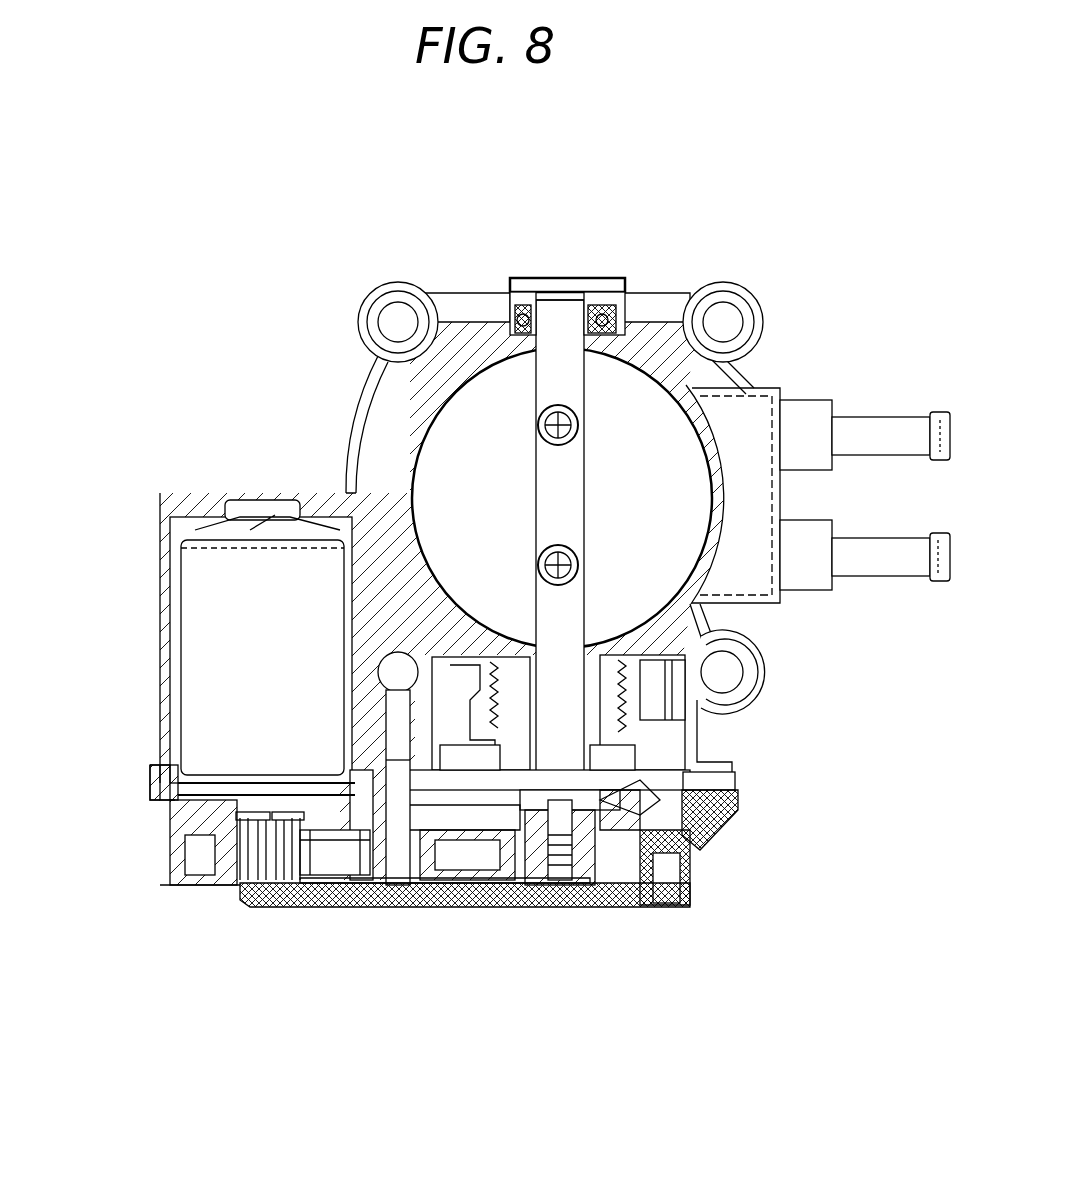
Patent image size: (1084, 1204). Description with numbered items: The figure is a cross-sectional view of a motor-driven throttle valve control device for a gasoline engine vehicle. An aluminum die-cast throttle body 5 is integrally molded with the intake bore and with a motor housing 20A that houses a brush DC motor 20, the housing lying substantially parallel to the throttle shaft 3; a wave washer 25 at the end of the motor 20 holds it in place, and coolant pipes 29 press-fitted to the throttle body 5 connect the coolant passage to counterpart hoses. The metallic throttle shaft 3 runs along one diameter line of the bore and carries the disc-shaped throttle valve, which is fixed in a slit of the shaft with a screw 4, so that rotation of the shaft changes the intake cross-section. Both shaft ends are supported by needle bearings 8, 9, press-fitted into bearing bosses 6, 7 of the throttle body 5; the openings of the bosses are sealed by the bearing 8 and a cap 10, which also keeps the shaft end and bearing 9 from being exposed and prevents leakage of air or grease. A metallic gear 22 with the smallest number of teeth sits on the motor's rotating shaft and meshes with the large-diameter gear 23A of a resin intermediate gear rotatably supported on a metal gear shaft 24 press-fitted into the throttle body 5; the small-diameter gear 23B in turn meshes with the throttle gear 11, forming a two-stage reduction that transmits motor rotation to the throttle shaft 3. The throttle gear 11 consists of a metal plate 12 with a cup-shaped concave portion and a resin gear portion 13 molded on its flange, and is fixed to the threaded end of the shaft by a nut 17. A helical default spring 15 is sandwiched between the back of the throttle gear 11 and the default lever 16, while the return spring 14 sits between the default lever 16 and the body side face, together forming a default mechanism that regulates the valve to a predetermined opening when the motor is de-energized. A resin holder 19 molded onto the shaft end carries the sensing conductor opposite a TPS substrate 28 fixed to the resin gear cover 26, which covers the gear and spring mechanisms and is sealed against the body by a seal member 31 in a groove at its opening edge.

The throttle shaft 3 is at (607, 551).
The screw 4 is at (584, 418).
The throttle body 5 is at (762, 393).
The bearing boss 6 is at (742, 672).
The bearing boss 7 is at (616, 279).
The bearing 8 is at (723, 707).
The bearing 9 is at (650, 290).
The cap 10 is at (532, 279).
The throttle gear 11 is at (697, 857).
The metal plate 12 is at (690, 855).
The gear portion 13 is at (443, 900).
The return spring 14 is at (655, 738).
The default spring 15 is at (700, 800).
The default lever 16 is at (717, 762).
The nut 17 is at (640, 905).
The resin holder 19 is at (593, 895).
The motor 20 is at (205, 620).
The motor housing 20A is at (178, 575).
The gear 22 is at (217, 880).
The large-diameter gear 23A is at (285, 880).
The small-diameter gear 23B is at (343, 862).
The gear shaft 24 is at (373, 893).
The wave washer 25 is at (215, 520).
The gear cover 26 is at (442, 895).
The TPS substrate 28 is at (502, 895).
The coolant pipe 29 is at (872, 425).
The seal member 31 is at (165, 795).